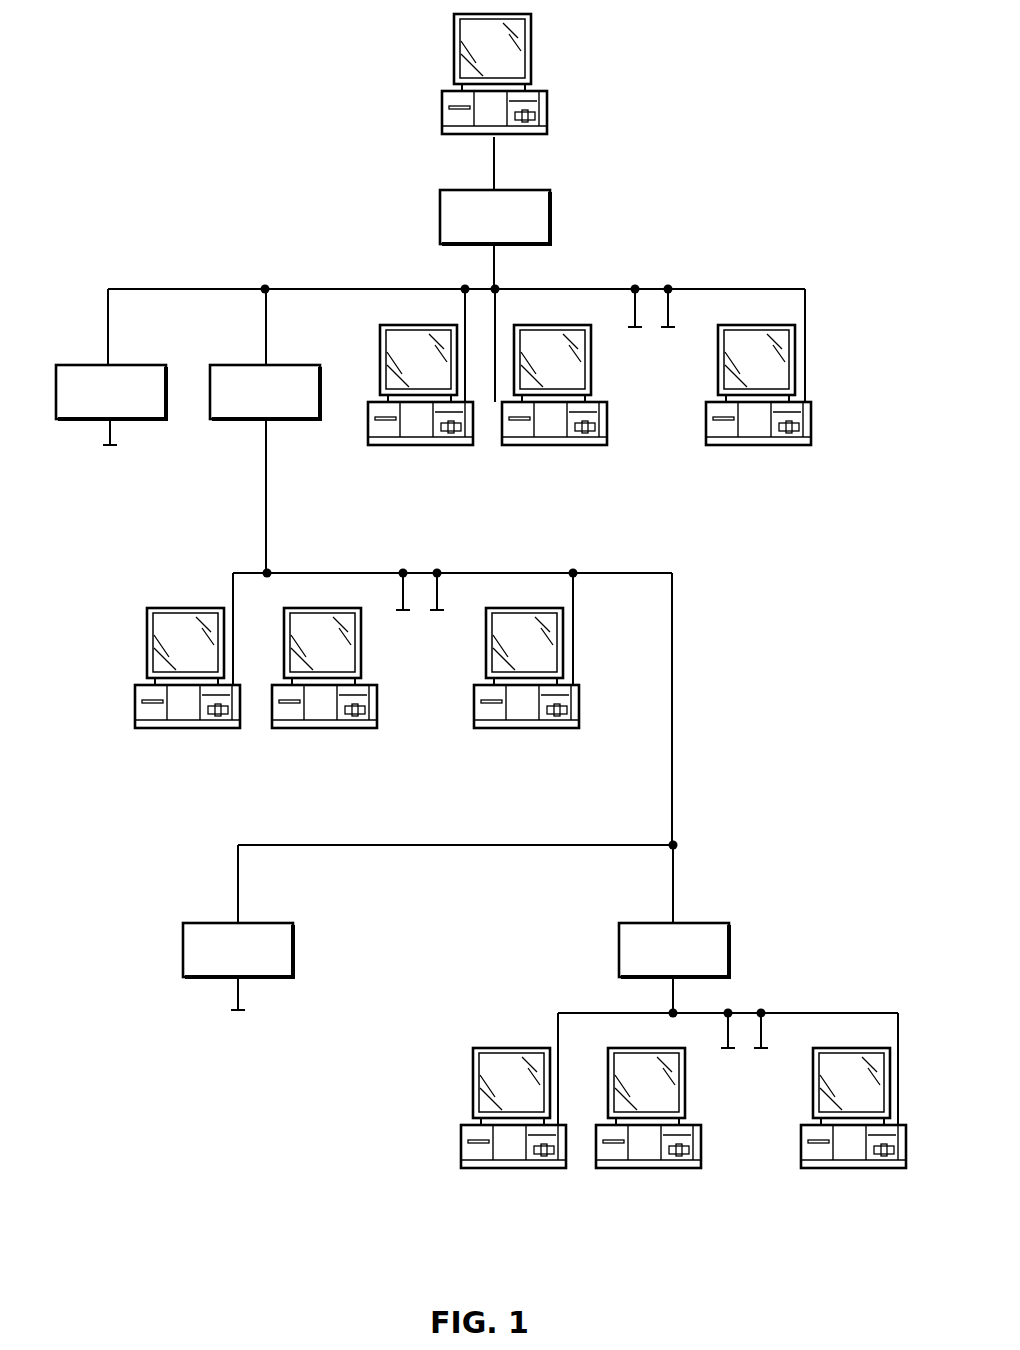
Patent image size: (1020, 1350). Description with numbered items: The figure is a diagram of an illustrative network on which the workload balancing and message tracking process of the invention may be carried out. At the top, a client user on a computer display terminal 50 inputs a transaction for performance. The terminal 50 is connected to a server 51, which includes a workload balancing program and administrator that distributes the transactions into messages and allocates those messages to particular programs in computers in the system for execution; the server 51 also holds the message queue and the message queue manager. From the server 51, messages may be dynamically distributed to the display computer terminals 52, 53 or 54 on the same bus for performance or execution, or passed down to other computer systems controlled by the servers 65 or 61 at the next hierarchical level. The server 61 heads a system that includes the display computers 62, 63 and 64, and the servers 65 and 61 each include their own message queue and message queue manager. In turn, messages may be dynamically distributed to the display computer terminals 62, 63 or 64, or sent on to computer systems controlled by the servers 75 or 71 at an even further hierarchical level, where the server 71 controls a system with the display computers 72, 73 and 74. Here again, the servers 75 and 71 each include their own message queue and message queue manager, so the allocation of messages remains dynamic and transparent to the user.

The computer display terminal 50 is at (531, 48).
The server 51 is at (549, 219).
The display computer terminal 52 is at (398, 445).
The display computer terminal 53 is at (535, 445).
The display computer terminal 54 is at (740, 445).
The server 61 is at (295, 365).
The display computer 62 is at (170, 728).
The display computer 63 is at (307, 728).
The display computer 64 is at (510, 728).
The server 65 is at (138, 365).
The server 71 is at (702, 923).
The display computer 72 is at (495, 1168).
The display computer 73 is at (630, 1168).
The display computer 74 is at (835, 1168).
The server 75 is at (268, 923).